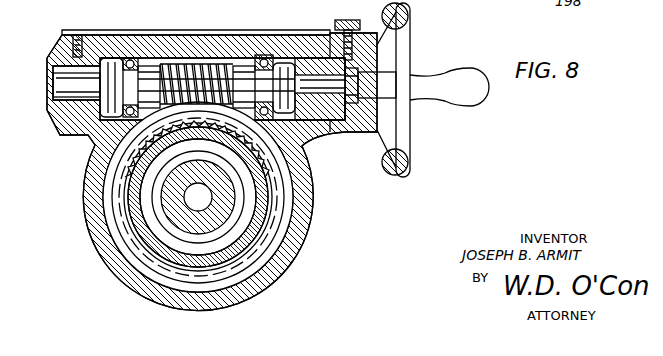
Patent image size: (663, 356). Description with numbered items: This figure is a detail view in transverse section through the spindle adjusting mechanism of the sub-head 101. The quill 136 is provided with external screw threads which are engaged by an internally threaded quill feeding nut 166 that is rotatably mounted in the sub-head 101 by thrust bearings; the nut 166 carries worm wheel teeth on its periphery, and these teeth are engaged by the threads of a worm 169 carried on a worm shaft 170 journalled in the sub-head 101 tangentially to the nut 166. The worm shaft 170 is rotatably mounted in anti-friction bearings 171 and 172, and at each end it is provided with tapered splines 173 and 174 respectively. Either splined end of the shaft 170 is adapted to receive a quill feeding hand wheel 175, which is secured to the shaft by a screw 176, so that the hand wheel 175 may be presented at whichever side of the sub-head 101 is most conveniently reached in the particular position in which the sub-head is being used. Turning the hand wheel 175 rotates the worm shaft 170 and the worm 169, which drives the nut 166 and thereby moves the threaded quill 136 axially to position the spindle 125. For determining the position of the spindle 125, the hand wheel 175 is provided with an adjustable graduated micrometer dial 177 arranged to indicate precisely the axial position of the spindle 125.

The sub-head 101 is at (78, 254).
The spindle 125 is at (206, 178).
The quill 136 is at (132, 190).
The quill feeding nut 166 is at (118, 161).
The worm 169 is at (206, 70).
The worm shaft 170 is at (168, 62).
The anti-friction bearing 171 is at (130, 57).
The anti-friction bearing 172 is at (258, 60).
The tapered spline 173 is at (68, 88).
The tapered spline 174 is at (314, 92).
The quill feeding hand wheel 175 is at (400, 60).
The screw 176 is at (388, 90).
The adjustable graduated micrometer dial 177 is at (366, 134).